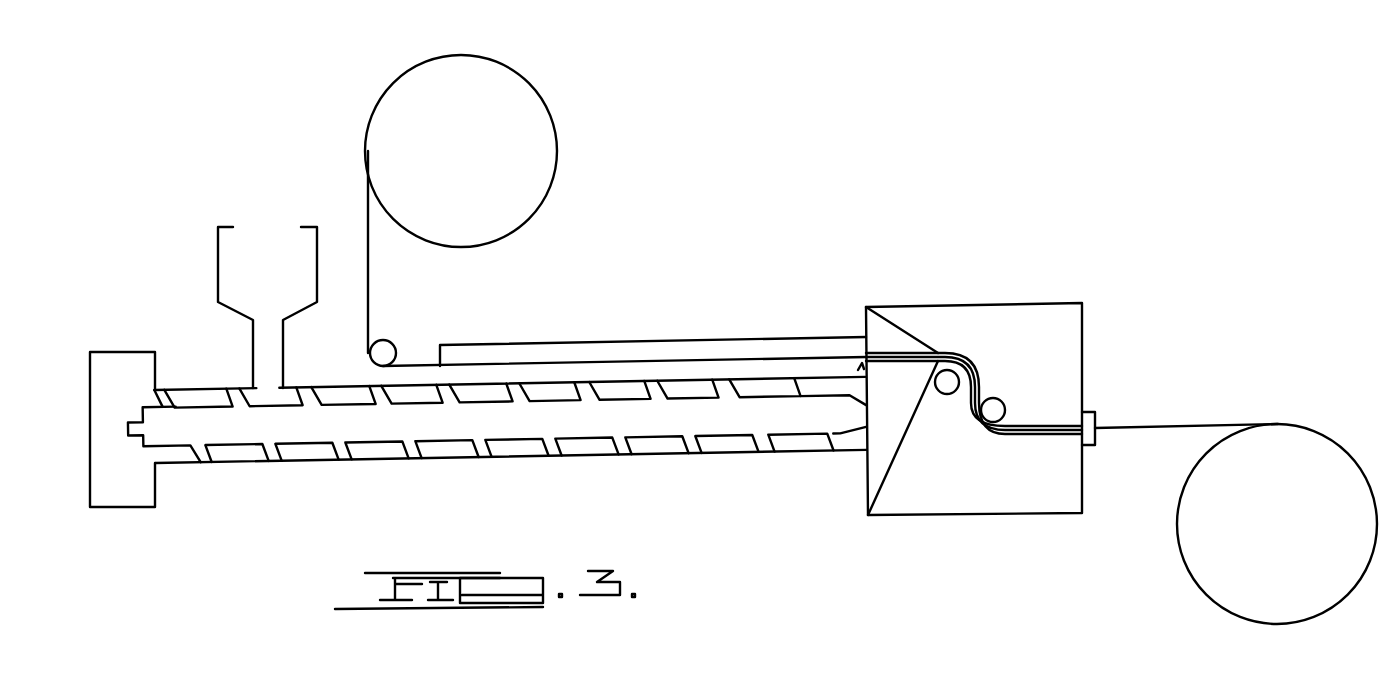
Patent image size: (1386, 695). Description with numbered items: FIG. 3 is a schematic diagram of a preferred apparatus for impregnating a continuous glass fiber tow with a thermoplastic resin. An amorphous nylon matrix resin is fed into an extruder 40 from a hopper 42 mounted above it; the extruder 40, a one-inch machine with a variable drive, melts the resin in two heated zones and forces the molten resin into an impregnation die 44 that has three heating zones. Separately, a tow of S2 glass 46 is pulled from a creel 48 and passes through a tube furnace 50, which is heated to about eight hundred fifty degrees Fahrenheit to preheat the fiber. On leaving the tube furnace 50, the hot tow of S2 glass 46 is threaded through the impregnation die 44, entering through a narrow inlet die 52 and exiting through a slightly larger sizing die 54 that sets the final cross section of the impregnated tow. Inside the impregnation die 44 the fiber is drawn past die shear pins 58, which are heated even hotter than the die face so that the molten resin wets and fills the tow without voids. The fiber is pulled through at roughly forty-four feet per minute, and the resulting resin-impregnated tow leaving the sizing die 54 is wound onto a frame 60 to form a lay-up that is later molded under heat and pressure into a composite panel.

The extruder 40 is at (665, 435).
The hopper 42 is at (280, 238).
The impregnation die 44 is at (972, 305).
The tow of S2 glass 46 is at (368, 296).
The creel 48 is at (548, 107).
The tube furnace 50 is at (670, 338).
The inlet die 52 is at (860, 352).
The sizing die 54 is at (1098, 423).
The die shear pins 58 is at (997, 402).
The frame 60 is at (1203, 577).